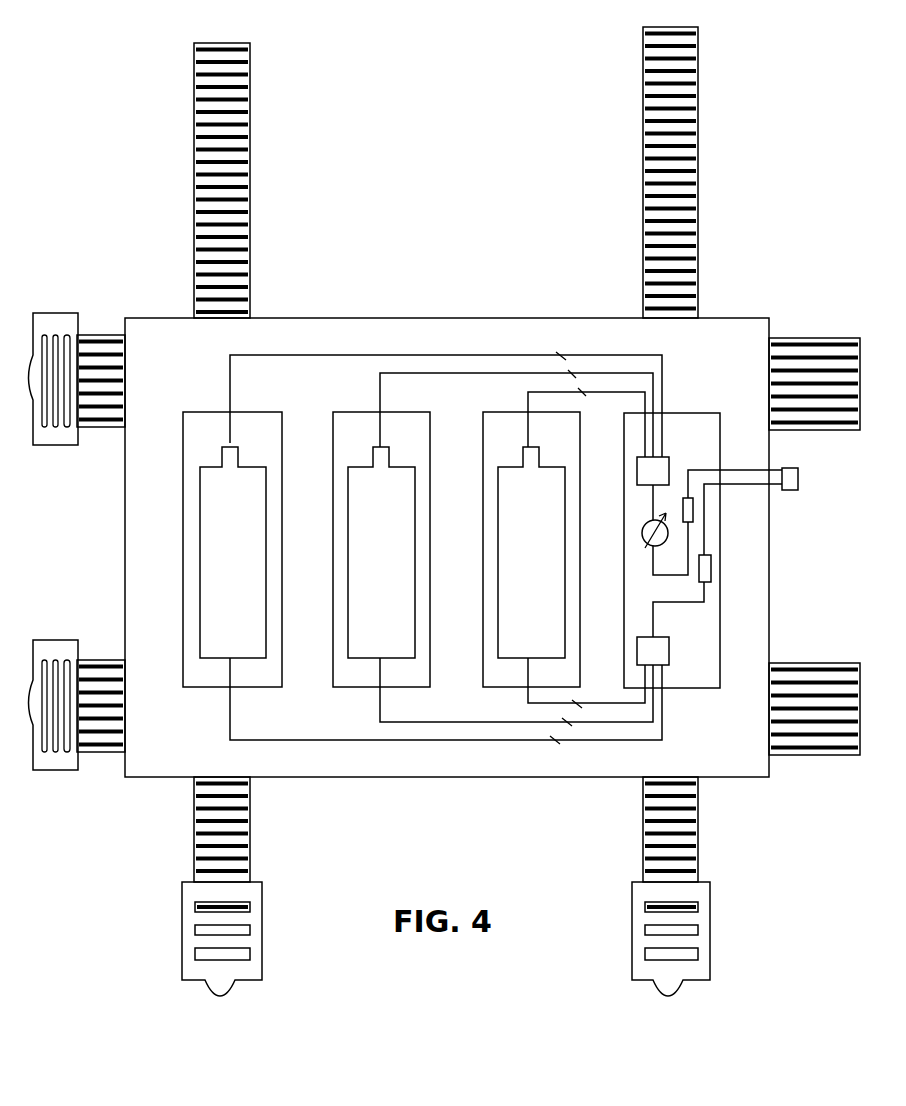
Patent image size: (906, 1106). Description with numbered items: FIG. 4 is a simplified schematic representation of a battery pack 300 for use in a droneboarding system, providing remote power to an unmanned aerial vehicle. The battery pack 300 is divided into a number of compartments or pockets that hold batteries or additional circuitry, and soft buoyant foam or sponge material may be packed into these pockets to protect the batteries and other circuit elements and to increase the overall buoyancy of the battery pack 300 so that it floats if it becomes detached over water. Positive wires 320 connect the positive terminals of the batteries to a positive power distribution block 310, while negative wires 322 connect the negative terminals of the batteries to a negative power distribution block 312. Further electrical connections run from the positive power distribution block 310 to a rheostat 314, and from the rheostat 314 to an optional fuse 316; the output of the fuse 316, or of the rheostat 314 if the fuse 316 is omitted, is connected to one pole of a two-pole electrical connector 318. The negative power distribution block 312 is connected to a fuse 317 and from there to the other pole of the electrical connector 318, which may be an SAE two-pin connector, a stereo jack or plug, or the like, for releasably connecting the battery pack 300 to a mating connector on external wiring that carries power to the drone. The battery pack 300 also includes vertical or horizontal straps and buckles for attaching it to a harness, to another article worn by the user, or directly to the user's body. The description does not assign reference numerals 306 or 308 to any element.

The battery pack 300 is at (160, 777).
The battery cell 306 is at (333, 478).
The electrode plate 308 is at (498, 560).
The positive power distribution block 310 is at (669, 462).
The negative power distribution block 312 is at (669, 655).
The rheostat 314 is at (642, 540).
The fuse 316 is at (694, 512).
The fuse 317 is at (711, 570).
The two-pole electrical connector 318 is at (797, 490).
The positive wires 320 is at (590, 392).
The negative wires 322 is at (580, 708).